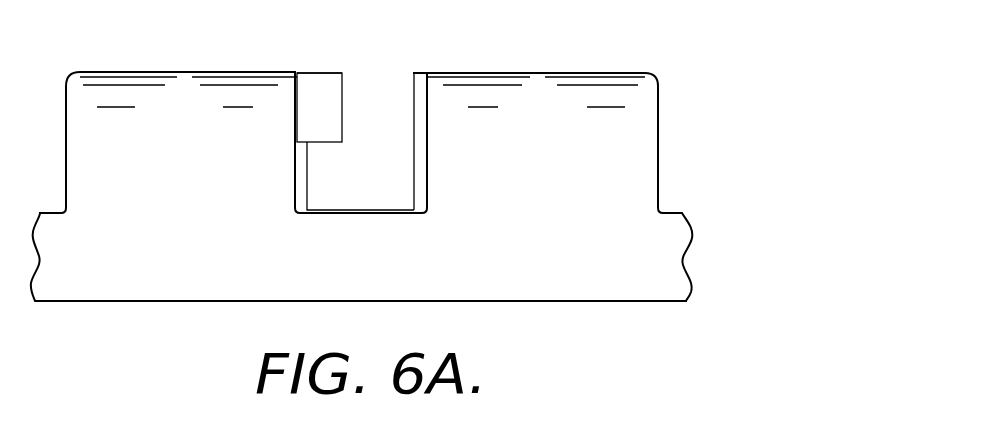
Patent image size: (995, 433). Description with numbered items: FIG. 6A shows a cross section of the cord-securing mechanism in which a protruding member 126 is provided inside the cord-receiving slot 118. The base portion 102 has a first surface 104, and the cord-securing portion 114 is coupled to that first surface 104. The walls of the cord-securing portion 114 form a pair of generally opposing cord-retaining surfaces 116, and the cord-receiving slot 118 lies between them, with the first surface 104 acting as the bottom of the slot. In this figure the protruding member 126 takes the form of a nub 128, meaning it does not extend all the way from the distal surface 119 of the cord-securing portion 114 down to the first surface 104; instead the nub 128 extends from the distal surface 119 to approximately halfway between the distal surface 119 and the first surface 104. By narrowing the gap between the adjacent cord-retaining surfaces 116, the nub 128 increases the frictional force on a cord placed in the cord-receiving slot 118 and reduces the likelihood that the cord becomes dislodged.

The base portion 102 is at (617, 285).
The first surface 104 is at (398, 212).
The cord-securing portion 114 is at (602, 90).
The cord-retaining surfaces 116 is at (302, 157).
The cord-receiving slot 118 is at (352, 212).
The distal surface 119 is at (187, 72).
The protruding member 126 is at (308, 82).
The nub 128 is at (328, 75).